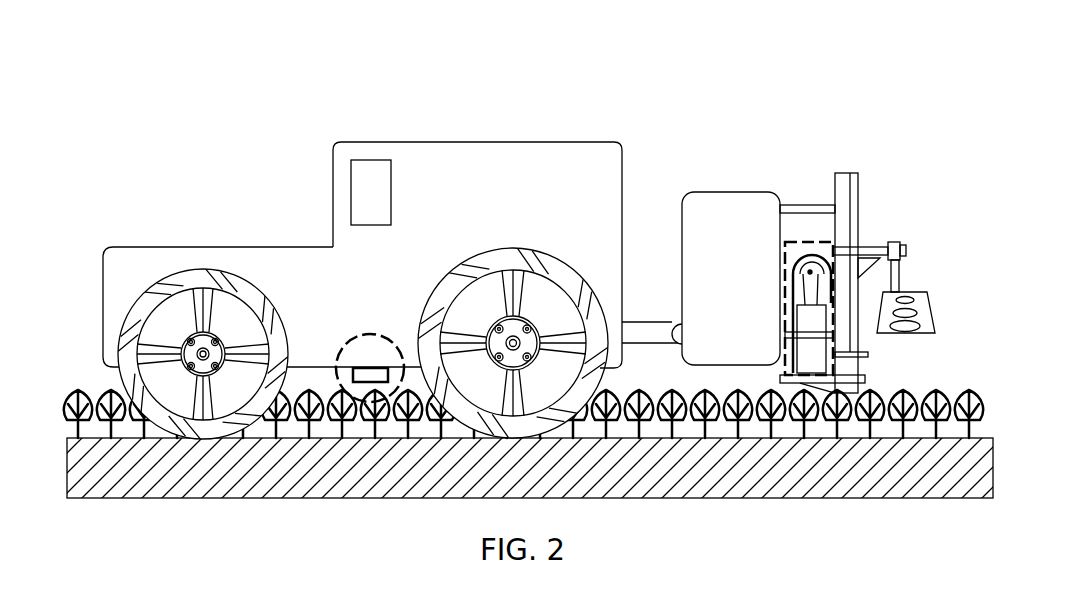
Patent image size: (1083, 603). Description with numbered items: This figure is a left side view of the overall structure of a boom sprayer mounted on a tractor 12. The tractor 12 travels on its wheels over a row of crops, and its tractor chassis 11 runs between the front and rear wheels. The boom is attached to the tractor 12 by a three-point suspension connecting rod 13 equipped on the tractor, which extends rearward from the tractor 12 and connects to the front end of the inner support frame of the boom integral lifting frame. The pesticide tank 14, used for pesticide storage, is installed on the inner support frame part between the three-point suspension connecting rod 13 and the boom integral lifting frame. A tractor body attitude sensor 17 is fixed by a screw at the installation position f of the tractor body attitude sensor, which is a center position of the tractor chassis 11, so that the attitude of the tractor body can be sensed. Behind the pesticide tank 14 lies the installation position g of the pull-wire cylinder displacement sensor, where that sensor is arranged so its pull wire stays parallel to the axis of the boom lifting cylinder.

The tractor chassis 11 is at (407, 310).
The tractor 12 is at (522, 222).
The three-point suspension connecting rod 13 is at (633, 335).
The pesticide tank 14 is at (716, 338).
The tractor body attitude sensor 17 is at (373, 375).
The installation position of tractor body attitude sensor f is at (345, 340).
The installation position of pull-wire cylinder displacement sensor g is at (825, 243).